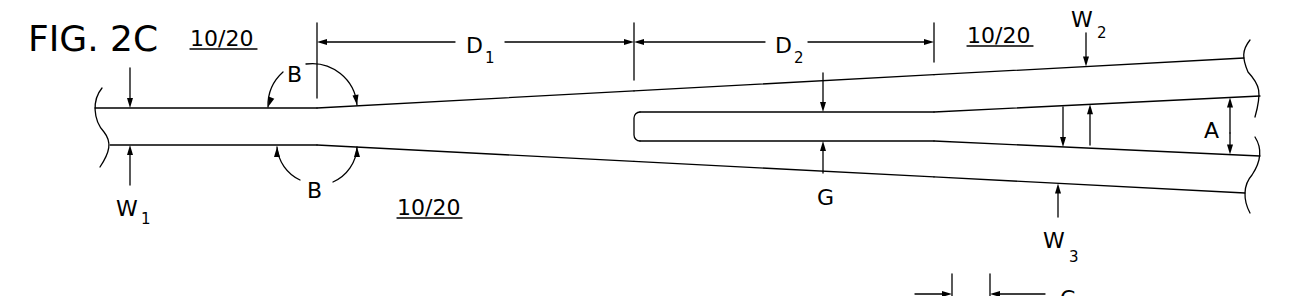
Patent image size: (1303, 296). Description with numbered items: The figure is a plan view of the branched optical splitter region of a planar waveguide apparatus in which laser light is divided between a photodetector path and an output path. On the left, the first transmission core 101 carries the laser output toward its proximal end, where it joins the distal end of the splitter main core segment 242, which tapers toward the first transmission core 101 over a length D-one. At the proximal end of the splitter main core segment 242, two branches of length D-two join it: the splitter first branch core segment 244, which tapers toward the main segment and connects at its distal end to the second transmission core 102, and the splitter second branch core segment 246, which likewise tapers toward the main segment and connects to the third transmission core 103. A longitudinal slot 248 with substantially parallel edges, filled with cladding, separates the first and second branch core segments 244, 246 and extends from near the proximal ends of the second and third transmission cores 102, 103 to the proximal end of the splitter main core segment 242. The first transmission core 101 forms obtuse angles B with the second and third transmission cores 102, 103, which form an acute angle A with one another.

The first transmission core 101 is at (220, 127).
The second transmission core 102 is at (1187, 80).
The third transmission core 103 is at (1140, 163).
The splitter main core segment 242 is at (508, 128).
The splitter first branch core segment 244 is at (728, 98).
The splitter second branch core segment 246 is at (897, 163).
The longitudinal slot 248 is at (783, 127).